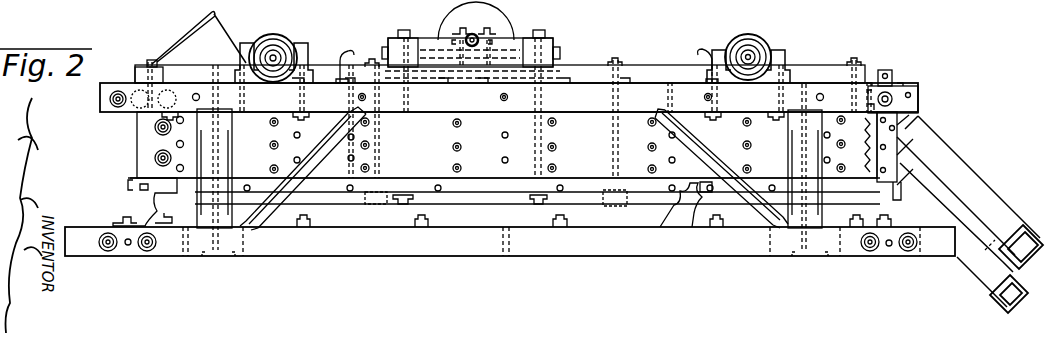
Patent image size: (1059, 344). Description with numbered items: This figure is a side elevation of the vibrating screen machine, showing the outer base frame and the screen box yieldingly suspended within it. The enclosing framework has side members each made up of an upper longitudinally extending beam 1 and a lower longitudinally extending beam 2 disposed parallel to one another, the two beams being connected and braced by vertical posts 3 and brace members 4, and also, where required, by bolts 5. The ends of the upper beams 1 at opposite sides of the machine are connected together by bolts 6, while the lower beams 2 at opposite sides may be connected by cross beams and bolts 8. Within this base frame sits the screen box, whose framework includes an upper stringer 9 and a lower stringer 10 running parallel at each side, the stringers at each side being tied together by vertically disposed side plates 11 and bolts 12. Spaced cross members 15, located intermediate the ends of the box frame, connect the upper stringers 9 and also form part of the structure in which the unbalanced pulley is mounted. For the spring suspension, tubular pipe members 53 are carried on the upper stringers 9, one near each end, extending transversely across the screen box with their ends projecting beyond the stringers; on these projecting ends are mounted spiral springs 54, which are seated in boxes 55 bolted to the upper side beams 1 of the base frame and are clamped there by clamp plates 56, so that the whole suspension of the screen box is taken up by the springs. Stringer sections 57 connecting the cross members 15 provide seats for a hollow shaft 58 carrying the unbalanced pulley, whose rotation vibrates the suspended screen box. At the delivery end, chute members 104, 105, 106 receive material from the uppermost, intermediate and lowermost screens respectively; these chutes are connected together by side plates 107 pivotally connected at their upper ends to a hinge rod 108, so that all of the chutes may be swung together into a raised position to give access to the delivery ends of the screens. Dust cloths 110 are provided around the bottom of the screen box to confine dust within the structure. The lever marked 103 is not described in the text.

The upper longitudinally extending beam 1 is at (567, 93).
The lower longitudinally extending beam 2 is at (510, 241).
The vertical post 3 is at (221, 141).
The brace member 4 is at (335, 153).
The bolt 5 is at (218, 167).
The bolt 6 is at (102, 112).
The bolt 8 is at (138, 252).
The upper stringer 9 is at (640, 72).
The lower stringer 10 is at (508, 154).
The side plate 11 is at (308, 145).
The bolt 12 is at (372, 58).
The cross member 15 is at (397, 38).
The member 53 is at (281, 52).
The spiral spring 54 is at (273, 50).
The box 55 is at (347, 60).
The clamp plate 56 is at (470, 33).
The stringer section 57 is at (504, 38).
The hollow shaft 58 is at (486, 33).
The lever 103 is at (200, 42).
The chute member 104 is at (987, 197).
The chute member 105 is at (1010, 280).
The chute member 106 is at (978, 275).
The side plate 107 is at (895, 126).
The hinge rod 108 is at (906, 86).
The dust cloth 110 is at (704, 208).